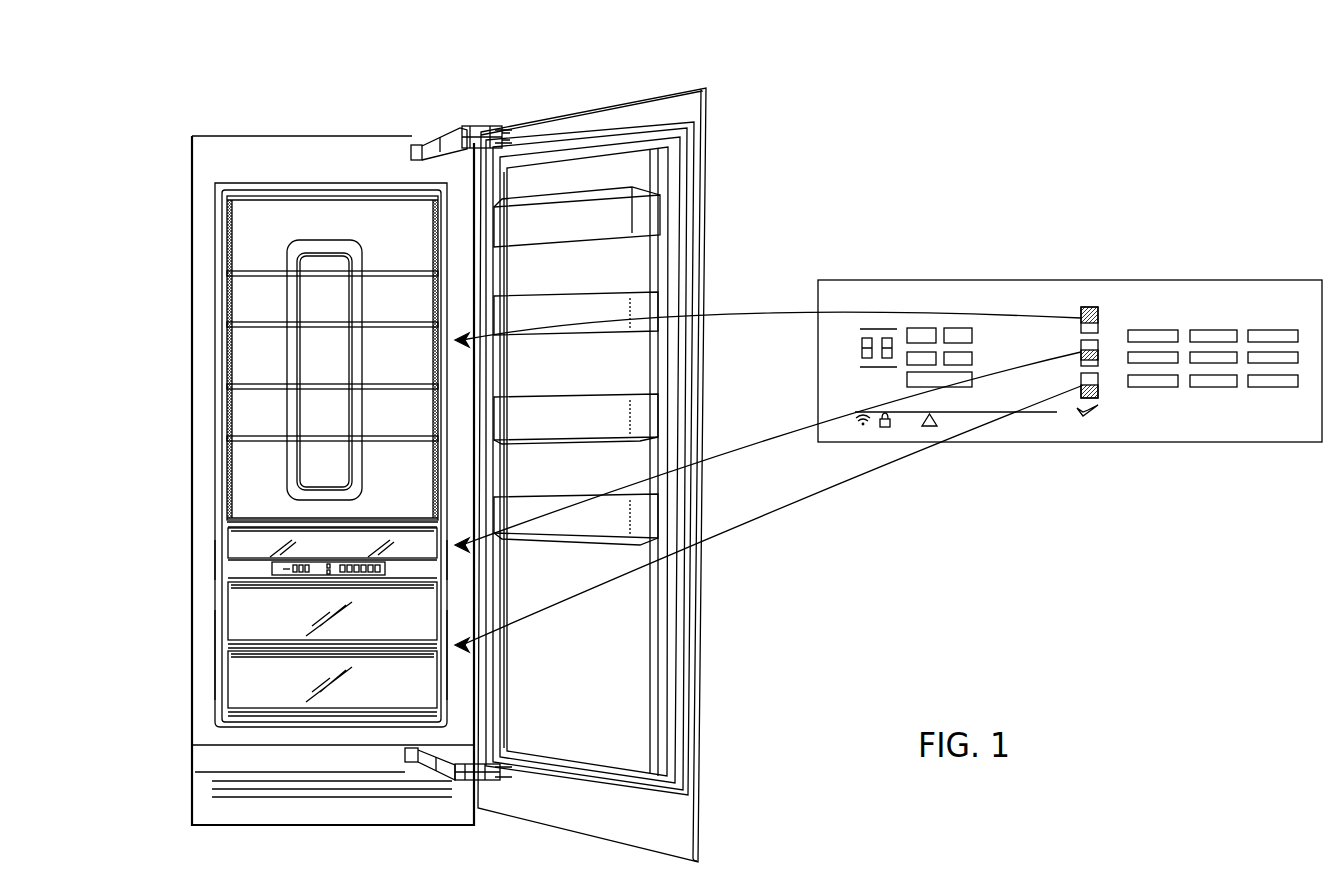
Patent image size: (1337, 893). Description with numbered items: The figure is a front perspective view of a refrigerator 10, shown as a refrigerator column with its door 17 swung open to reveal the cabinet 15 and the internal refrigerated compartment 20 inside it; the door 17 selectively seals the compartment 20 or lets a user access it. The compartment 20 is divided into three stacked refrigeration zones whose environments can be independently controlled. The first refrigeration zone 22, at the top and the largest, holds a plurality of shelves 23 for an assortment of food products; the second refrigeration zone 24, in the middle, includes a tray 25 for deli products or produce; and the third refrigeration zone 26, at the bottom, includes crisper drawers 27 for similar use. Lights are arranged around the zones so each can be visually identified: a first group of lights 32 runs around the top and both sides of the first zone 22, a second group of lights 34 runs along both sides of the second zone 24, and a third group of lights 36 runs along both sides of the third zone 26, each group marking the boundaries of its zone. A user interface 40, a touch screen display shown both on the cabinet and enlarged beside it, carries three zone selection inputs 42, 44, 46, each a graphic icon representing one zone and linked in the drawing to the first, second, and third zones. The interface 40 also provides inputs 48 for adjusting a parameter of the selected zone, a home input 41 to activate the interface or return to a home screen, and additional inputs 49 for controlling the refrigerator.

The refrigerator 10 is at (237, 104).
The cabinet 15 is at (305, 152).
The door 17 is at (678, 108).
The internal refrigerated compartment 20 is at (266, 195).
The first refrigeration zone 22 is at (245, 313).
The shelves 23 is at (273, 328).
The second refrigeration zone 24 is at (240, 543).
The tray 25 is at (262, 528).
The third refrigeration zone 26 is at (247, 635).
The crisper drawers 27 is at (262, 637).
The first group of lights 32 is at (356, 185).
The second group of lights 34 is at (218, 546).
The third group of lights 36 is at (218, 625).
The user interface 40 is at (313, 572).
The home input 41 is at (1092, 416).
The zone selection input 42 is at (1080, 312).
The zone selection input 44 is at (1095, 345).
The zone selection input 46 is at (1095, 380).
The inputs 48 is at (920, 328).
The additional inputs 49 is at (1212, 333).